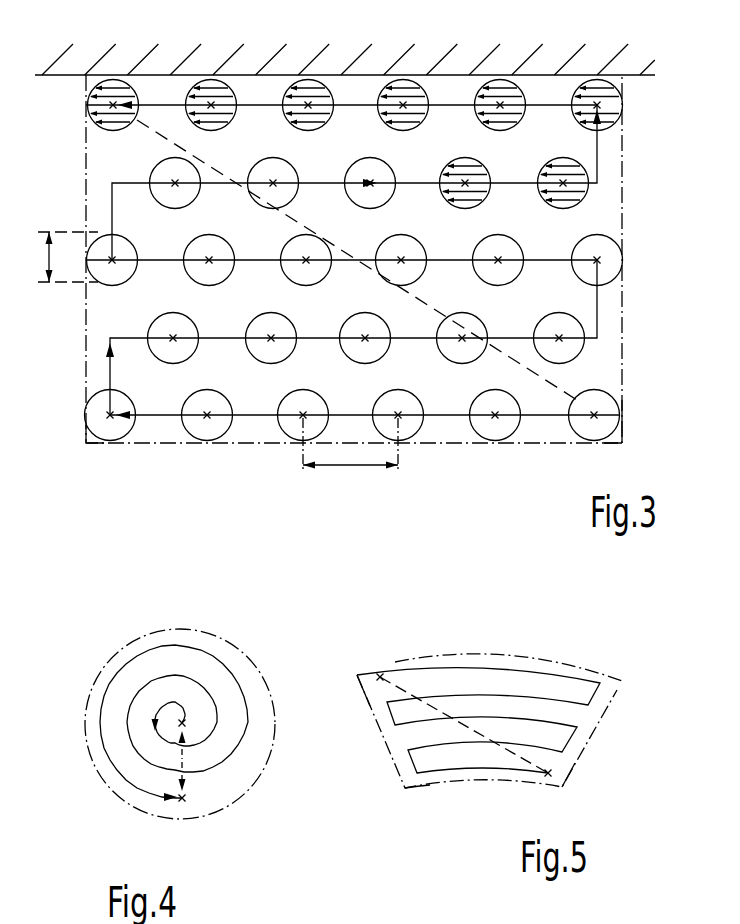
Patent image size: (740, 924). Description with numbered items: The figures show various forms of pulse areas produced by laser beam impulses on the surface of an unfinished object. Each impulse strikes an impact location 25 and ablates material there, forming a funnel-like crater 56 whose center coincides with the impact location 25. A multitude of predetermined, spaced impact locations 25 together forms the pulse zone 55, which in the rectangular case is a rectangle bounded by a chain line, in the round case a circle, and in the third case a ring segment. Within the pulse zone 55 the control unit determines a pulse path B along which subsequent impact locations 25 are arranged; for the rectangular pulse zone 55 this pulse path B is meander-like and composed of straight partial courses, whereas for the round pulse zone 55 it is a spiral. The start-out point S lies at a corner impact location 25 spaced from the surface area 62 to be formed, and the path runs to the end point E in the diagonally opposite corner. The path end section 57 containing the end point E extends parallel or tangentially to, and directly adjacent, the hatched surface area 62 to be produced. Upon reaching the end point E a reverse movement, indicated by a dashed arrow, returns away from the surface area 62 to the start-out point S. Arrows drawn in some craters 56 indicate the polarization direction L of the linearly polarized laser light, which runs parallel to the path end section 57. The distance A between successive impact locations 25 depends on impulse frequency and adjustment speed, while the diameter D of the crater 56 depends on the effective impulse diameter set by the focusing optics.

In FIG. 3, the impact location 25 is at (114, 101).
In FIG. 4, the impact location 25 is at (190, 727).
In FIG. 5, the impact location 25 is at (380, 676).
In FIG. 3, the pulse zone 55 is at (530, 444).
In FIG. 4, the pulse zone 55 is at (112, 788).
In FIG. 5, the pulse zone 55 is at (437, 788).
In FIG. 3, the crater 56 is at (173, 208).
In FIG. 3, the path end section 57 is at (365, 112).
In FIG. 4, the path end section 57 is at (165, 793).
In FIG. 5, the path end section 57 is at (503, 665).
In FIG. 3, the surface area to be formed 62 is at (68, 75).
In FIG. 3, the polarization direction L is at (216, 101).
In FIG. 3, the pulse path B is at (249, 422).
In FIG. 4, the pulse path B is at (213, 658).
In FIG. 5, the pulse path B is at (597, 698).
In FIG. 3, the diameter of the crater D is at (47, 257).
In FIG. 3, the distance between subsequent impact locations A is at (350, 445).